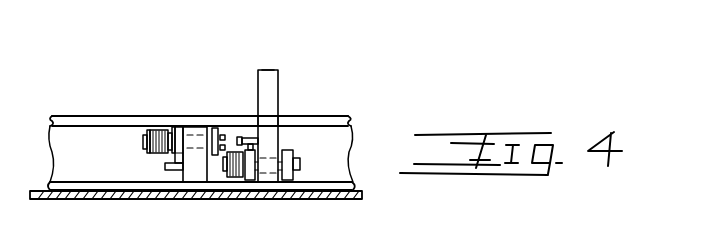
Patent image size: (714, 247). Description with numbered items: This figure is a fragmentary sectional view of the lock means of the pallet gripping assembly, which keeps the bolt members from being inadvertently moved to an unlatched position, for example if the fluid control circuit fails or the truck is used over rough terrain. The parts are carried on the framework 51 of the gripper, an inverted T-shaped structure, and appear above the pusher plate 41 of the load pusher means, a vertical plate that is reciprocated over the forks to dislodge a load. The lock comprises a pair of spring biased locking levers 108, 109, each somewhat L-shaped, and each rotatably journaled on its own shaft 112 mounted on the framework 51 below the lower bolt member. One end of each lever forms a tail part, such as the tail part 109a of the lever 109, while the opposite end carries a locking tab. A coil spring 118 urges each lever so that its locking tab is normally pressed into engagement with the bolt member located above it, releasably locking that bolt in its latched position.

The framework 51 is at (91, 113).
The pusher plate 41 is at (357, 200).
The locking lever 108 is at (198, 183).
The locking lever 109 is at (270, 88).
The tail part 109a is at (264, 73).
The shaft 112 is at (147, 143).
The coil spring 118 is at (166, 156).